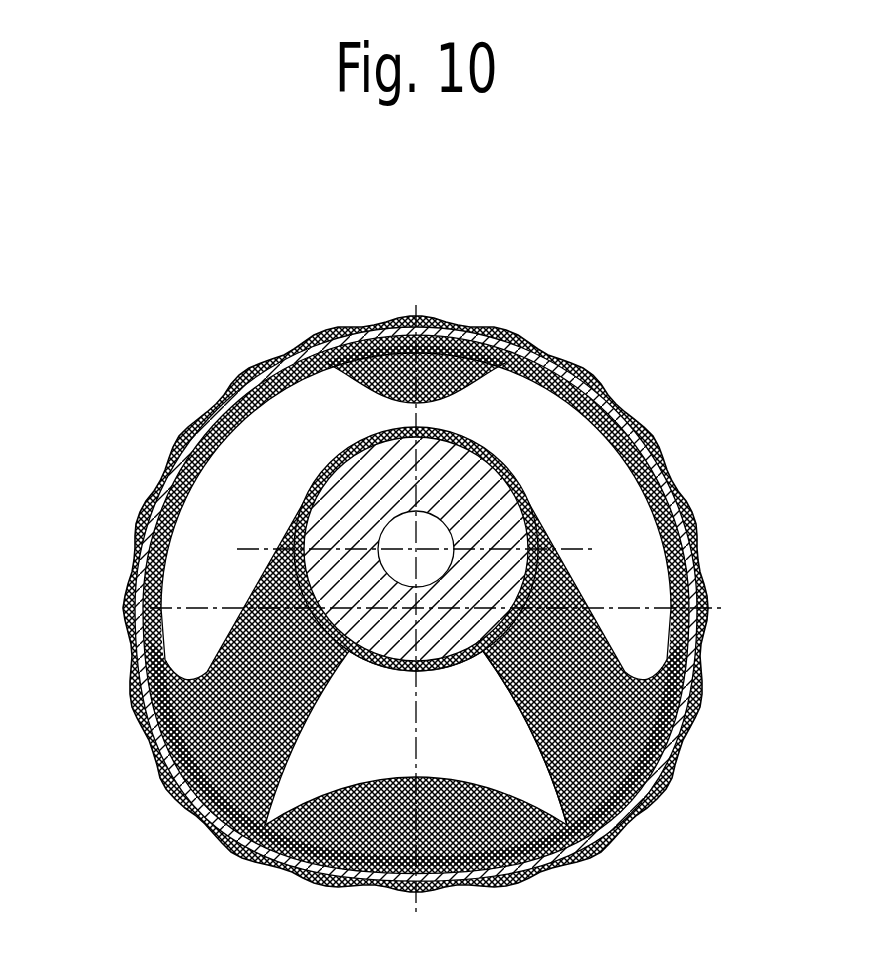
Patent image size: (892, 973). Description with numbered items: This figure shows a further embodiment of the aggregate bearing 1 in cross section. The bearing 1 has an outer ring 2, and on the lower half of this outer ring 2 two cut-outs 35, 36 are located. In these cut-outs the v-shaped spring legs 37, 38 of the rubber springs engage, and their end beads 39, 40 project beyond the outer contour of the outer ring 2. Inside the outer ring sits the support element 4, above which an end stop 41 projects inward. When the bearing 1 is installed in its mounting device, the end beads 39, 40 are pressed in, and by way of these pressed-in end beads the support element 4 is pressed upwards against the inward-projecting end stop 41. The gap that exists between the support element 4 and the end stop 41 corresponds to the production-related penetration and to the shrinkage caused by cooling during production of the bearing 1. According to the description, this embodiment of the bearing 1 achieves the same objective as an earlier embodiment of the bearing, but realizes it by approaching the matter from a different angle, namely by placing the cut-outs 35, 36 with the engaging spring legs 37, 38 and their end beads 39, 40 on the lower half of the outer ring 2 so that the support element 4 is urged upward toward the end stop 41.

The bearing 1 is at (251, 343).
The outer ring 2 is at (637, 440).
The support element 4 is at (333, 517).
The end stop 41 is at (537, 343).
The cut-out 35 is at (158, 740).
The cut-out 36 is at (667, 727).
The spring leg 37 is at (200, 665).
The spring leg 38 is at (630, 663).
The end bead 39 is at (193, 820).
The end bead 40 is at (640, 817).